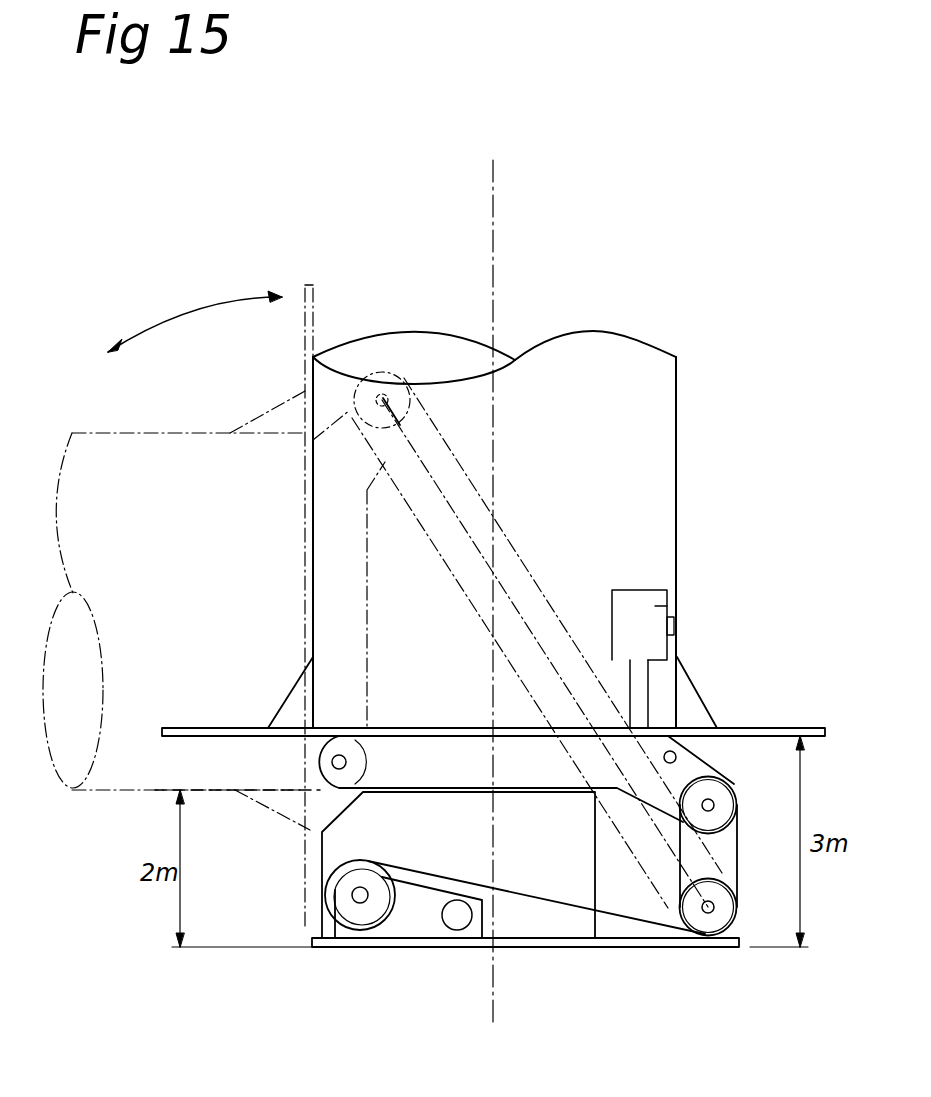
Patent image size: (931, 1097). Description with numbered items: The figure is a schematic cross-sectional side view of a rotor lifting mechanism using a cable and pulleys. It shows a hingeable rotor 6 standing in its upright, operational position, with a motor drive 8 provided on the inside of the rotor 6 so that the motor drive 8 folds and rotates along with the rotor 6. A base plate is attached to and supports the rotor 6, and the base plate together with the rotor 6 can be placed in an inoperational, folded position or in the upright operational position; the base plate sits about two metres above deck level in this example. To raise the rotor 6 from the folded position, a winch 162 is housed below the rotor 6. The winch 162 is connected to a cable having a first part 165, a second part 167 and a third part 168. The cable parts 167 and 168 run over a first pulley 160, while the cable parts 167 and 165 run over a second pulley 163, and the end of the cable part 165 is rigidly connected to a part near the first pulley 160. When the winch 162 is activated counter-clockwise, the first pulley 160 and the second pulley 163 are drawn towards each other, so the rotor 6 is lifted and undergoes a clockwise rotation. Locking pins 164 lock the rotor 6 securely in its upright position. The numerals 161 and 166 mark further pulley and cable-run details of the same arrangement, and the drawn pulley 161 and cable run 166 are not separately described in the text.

The rotor 6 is at (632, 381).
The motor drive 8 is at (655, 606).
The first pulley 160 is at (708, 888).
The deflection pulley 161 is at (730, 792).
The winch 162 is at (320, 888).
The second pulley 163 is at (365, 407).
The locking pins 164 is at (676, 757).
The first part of cable 165 is at (466, 577).
The cable run 166 is at (473, 542).
The second part of cable 167 is at (525, 568).
The third part of cable 168 is at (558, 905).